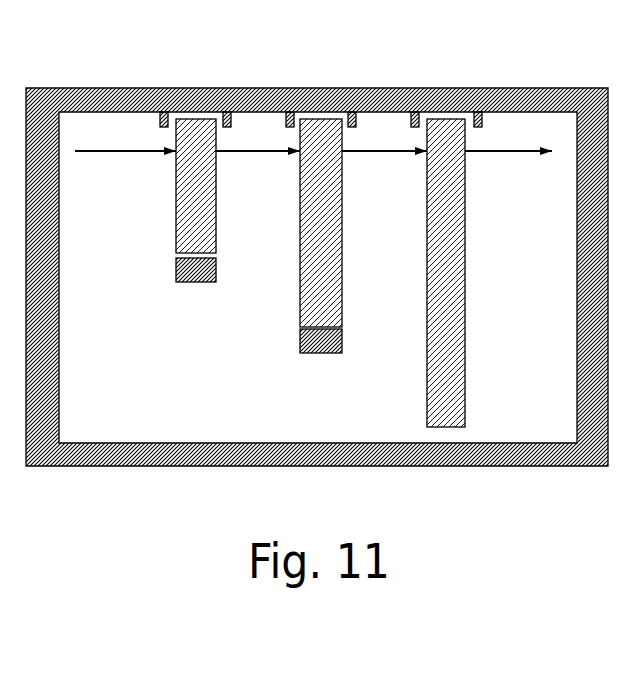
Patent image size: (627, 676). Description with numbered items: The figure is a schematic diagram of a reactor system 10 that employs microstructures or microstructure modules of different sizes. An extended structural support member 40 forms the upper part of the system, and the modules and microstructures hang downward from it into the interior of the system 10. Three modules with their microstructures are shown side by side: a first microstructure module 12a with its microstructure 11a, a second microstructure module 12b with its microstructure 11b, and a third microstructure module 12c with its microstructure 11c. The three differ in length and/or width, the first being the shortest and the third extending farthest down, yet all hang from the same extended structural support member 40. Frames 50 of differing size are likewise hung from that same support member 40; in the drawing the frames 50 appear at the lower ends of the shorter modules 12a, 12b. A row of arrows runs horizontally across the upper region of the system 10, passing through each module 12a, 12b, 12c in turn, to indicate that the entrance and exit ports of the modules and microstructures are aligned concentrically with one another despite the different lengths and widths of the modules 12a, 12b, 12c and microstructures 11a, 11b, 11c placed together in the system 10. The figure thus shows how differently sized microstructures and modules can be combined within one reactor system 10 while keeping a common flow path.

The reactor system 10 is at (317, 294).
The extended structural support member 40 is at (318, 98).
The microstructure module 12a is at (154, 188).
The microstructure 11a is at (193, 211).
The microstructure module 12b is at (297, 223).
The microstructure 11b is at (318, 276).
The microstructure module 12c is at (492, 273).
The microstructure 11c is at (446, 363).
The frame 50 is at (202, 272).